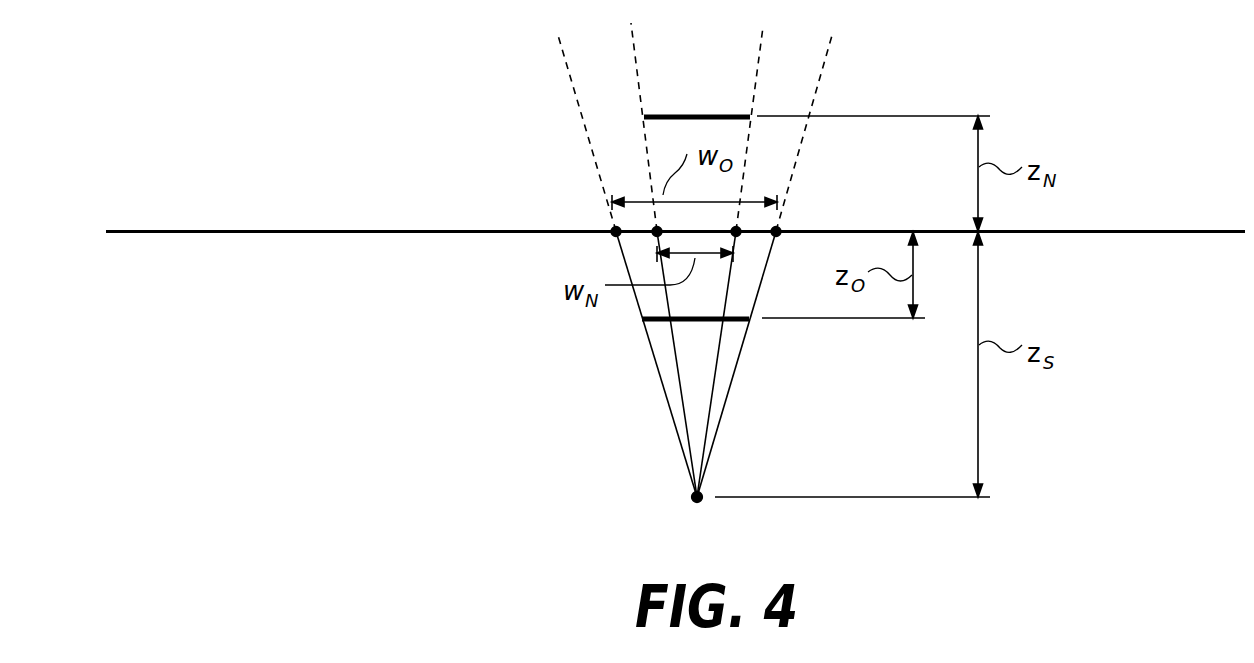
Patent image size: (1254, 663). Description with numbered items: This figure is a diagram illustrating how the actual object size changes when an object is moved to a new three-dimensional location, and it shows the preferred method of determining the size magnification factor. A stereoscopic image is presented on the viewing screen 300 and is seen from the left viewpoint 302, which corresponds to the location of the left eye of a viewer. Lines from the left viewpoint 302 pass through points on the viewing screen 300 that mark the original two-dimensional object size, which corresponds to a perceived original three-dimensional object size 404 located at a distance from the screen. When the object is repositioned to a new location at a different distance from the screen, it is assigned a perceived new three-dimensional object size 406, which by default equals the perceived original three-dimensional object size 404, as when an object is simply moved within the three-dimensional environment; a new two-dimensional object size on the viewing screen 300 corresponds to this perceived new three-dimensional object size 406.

The viewing screen 300 is at (183, 231).
The left viewpoint 302 is at (689, 497).
The perceived original 3-D object size 404 is at (655, 323).
The perceived new 3-D object size 406 is at (658, 115).